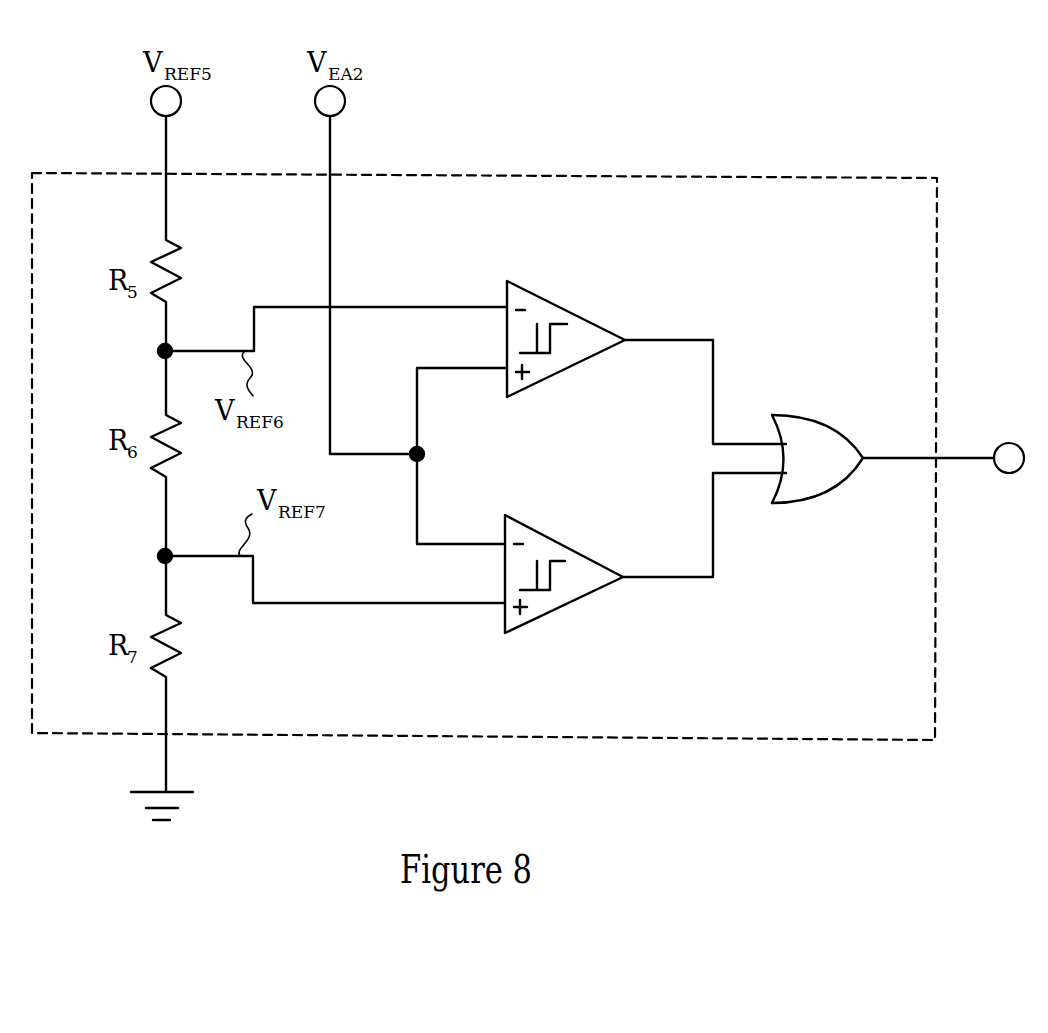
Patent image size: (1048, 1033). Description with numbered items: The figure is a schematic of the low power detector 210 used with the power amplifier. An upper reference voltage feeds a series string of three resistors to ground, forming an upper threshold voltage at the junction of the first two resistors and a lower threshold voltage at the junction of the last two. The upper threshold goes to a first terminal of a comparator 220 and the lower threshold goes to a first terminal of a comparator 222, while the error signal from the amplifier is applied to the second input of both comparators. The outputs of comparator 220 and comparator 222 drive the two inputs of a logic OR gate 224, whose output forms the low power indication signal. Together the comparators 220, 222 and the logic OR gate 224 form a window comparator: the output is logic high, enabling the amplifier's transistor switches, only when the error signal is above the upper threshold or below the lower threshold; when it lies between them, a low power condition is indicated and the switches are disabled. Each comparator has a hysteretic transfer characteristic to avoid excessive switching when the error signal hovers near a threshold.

The low power detector 210 is at (880, 178).
The comparator 220 is at (563, 368).
The comparator 222 is at (563, 603).
The logic OR gate 224 is at (812, 418).